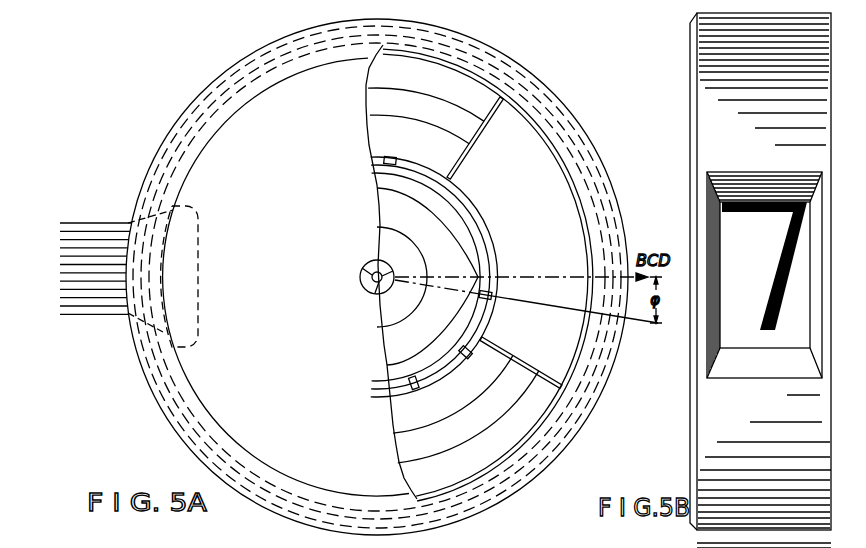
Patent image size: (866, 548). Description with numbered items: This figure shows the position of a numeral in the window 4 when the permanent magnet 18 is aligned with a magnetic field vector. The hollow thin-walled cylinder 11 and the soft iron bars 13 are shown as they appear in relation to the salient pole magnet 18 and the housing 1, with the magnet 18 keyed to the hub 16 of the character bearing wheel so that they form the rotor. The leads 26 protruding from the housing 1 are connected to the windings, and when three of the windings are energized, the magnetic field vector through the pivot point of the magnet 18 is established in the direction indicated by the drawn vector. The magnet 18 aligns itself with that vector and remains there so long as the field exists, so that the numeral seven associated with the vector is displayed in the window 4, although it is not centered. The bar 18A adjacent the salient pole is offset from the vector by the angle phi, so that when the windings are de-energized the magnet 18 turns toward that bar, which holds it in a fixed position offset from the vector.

In FIG. 5A, the housing 1 is at (508, 55).
In FIG. 5B, the window 4 is at (736, 186).
In FIG. 5A, the hollow thin-walled cylinder 11 is at (421, 163).
In FIG. 5A, the magnetizable element 13 is at (418, 386).
In FIG. 5A, the hub 16 is at (386, 228).
In FIG. 5A, the permanent magnet 18 is at (393, 343).
In FIG. 5A, the cam projection 18A is at (489, 298).
In FIG. 5A, the leads 26 is at (96, 222).